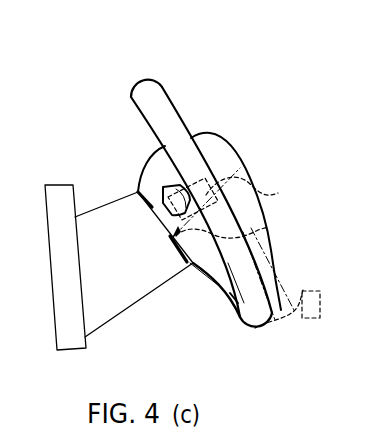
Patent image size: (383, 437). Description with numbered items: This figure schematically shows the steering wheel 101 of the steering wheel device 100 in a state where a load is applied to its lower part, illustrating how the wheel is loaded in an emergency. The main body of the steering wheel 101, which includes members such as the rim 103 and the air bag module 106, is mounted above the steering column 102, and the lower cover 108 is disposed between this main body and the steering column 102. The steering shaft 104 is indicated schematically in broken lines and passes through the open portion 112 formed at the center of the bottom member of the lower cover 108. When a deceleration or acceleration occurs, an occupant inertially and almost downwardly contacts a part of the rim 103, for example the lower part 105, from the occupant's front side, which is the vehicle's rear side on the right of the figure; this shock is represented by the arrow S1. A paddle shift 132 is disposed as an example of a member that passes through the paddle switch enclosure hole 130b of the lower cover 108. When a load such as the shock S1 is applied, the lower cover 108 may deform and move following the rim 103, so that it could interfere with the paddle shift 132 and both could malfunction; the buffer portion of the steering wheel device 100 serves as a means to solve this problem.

The steering wheel device 100 is at (62, 78).
The steering wheel 101 is at (148, 73).
The steering column 102 is at (96, 208).
The rim 103 is at (161, 91).
The steering shaft 104 is at (278, 193).
The lower part 105 is at (307, 318).
The air bag module 106 is at (219, 146).
The lower cover 108 is at (194, 270).
The open portion 112 is at (268, 227).
The paddle switch enclosure hole 130b is at (155, 167).
The paddle shift 132 is at (169, 222).
The shock S1 is at (320, 291).